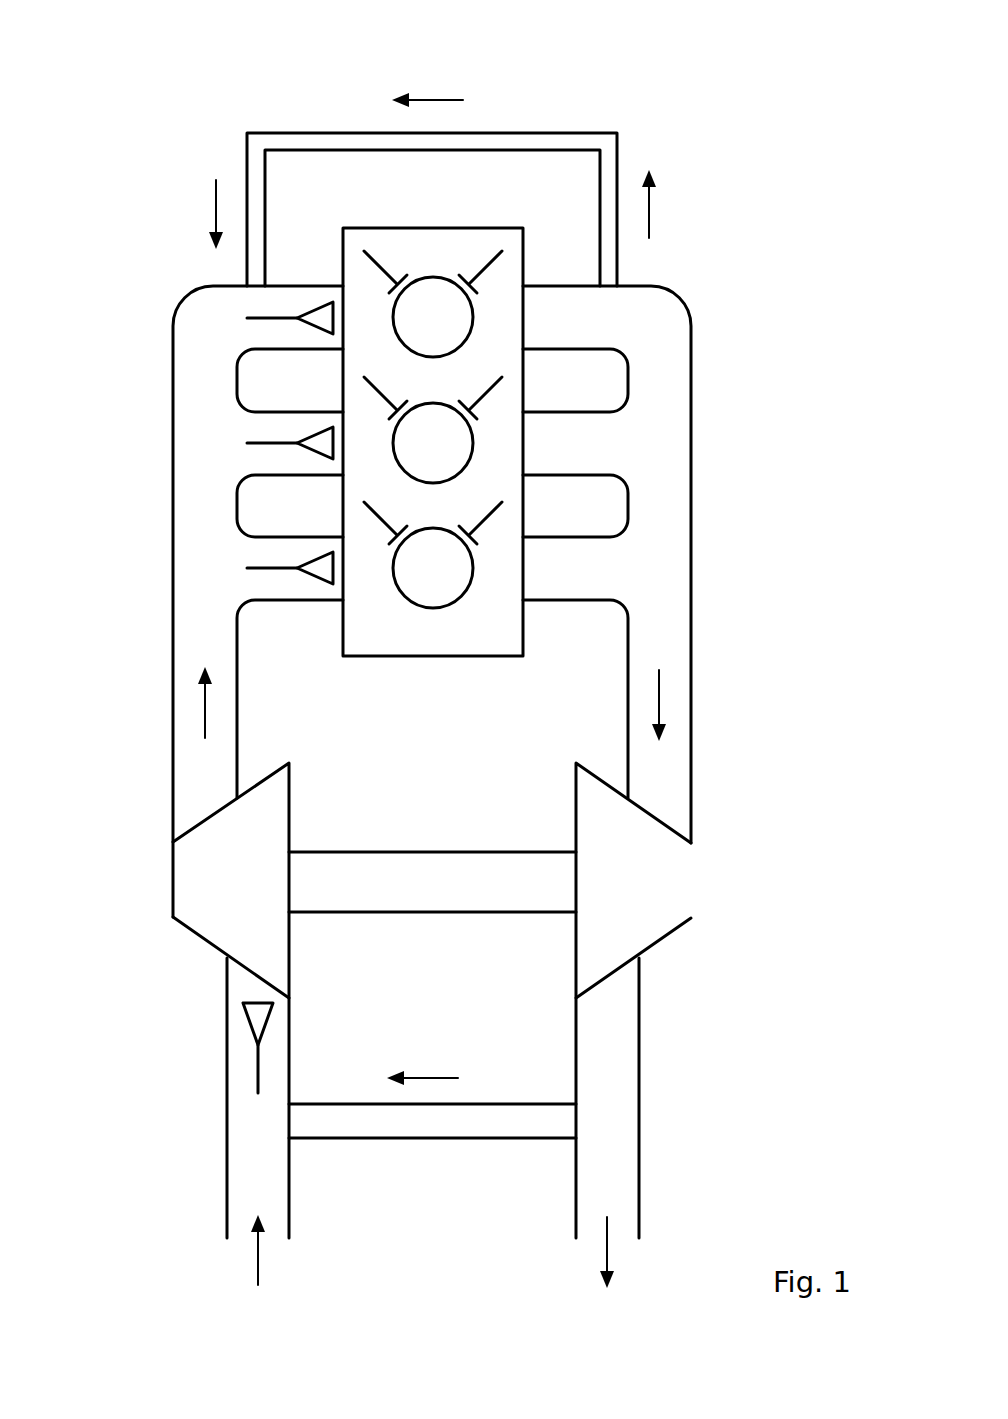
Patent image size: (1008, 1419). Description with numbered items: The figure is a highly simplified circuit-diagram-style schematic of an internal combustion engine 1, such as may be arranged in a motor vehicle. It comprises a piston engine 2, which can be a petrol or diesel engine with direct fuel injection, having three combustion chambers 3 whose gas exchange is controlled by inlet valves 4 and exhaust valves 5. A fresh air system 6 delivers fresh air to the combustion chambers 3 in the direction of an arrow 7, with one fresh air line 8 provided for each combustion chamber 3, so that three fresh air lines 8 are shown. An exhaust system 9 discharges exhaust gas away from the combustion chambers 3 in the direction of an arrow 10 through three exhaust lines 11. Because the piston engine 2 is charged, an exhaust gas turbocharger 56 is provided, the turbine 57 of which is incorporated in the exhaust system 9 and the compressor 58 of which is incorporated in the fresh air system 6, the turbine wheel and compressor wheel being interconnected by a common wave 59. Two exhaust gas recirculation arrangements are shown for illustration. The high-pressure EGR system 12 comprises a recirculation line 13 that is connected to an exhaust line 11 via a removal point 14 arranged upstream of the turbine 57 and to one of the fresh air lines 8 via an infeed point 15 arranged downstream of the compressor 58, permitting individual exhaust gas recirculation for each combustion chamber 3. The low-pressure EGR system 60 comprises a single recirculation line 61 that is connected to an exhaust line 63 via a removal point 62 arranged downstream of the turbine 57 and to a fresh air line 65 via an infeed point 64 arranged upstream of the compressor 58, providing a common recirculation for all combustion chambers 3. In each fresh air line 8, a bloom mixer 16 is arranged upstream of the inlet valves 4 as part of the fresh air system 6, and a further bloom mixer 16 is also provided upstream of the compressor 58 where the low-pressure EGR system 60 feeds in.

The internal combustion engine 1 is at (760, 188).
The piston engine 2 is at (387, 668).
The combustion chamber 3 is at (443, 334).
The inlet valve 4 is at (364, 251).
The exhaust valve 5 is at (502, 251).
The fresh air system 6 is at (163, 452).
The arrow 7 is at (205, 703).
The fresh air line 8 is at (313, 286).
The exhaust system 9 is at (702, 432).
The arrow 10 is at (660, 697).
The exhaust line 11 is at (551, 283).
The high-pressure EGR system 12 is at (604, 122).
The recirculation line 13 is at (313, 133).
The removal point 14 is at (617, 286).
The infeed point 15 is at (247, 286).
The bloom mixer 16 is at (278, 318).
The exhaust gas turbocharger 56 is at (162, 880).
The turbine 57 is at (646, 891).
The compressor 58 is at (256, 891).
The common wave 59 is at (459, 852).
The low-pressure EGR system 60 is at (417, 1151).
The recirculation line 61 is at (490, 1140).
The removal point 62 is at (576, 1104).
The exhaust line 63 is at (640, 1095).
The infeed point 64 is at (290, 1104).
The fresh air line 65 is at (226, 1125).